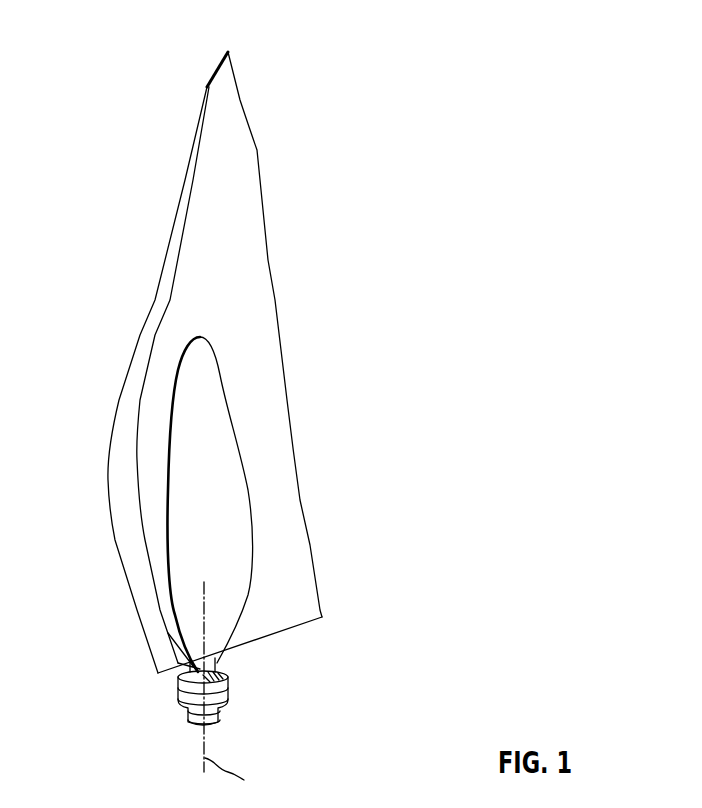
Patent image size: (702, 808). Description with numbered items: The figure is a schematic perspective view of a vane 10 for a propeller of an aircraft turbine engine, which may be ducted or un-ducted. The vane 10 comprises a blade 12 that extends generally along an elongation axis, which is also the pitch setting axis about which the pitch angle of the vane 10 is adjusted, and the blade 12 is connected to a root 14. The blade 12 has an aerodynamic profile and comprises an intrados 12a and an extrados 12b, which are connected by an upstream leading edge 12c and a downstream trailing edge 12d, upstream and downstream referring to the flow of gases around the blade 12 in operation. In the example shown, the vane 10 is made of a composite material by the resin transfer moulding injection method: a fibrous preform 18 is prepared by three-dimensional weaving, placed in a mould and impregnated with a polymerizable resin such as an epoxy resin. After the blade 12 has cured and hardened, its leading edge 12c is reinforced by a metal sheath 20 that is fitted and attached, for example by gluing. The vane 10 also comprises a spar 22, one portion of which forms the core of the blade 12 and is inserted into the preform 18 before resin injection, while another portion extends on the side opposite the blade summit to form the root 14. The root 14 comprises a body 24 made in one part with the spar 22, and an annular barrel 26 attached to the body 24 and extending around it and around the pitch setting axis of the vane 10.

The vane 10 is at (455, 220).
The blade 12 is at (246, 231).
The intrados 12a is at (223, 127).
The extrados 12b is at (212, 85).
The upstream leading edge 12c is at (172, 233).
The downstream trailing edge 12d is at (273, 307).
The root 14 is at (214, 665).
The fibrous preform 18 is at (272, 400).
The metal sheath 20 is at (150, 333).
The spar 22 is at (215, 493).
The body 24 is at (182, 675).
The annular barrel 26 is at (228, 695).